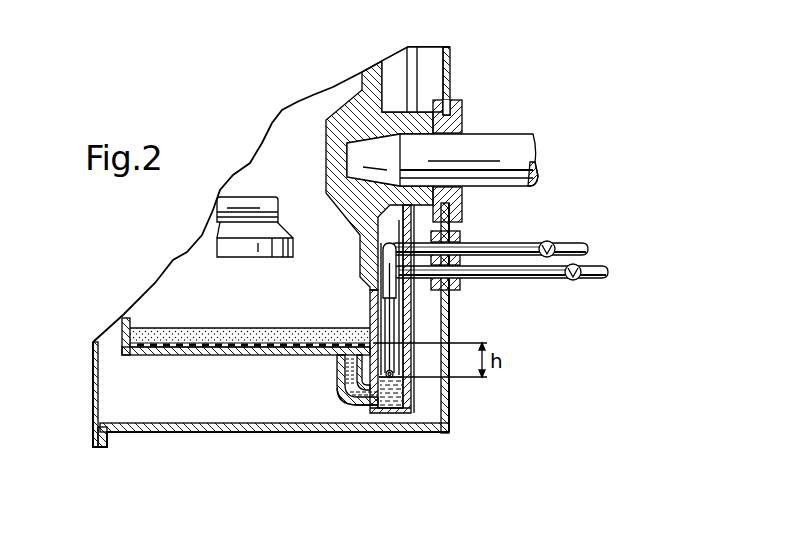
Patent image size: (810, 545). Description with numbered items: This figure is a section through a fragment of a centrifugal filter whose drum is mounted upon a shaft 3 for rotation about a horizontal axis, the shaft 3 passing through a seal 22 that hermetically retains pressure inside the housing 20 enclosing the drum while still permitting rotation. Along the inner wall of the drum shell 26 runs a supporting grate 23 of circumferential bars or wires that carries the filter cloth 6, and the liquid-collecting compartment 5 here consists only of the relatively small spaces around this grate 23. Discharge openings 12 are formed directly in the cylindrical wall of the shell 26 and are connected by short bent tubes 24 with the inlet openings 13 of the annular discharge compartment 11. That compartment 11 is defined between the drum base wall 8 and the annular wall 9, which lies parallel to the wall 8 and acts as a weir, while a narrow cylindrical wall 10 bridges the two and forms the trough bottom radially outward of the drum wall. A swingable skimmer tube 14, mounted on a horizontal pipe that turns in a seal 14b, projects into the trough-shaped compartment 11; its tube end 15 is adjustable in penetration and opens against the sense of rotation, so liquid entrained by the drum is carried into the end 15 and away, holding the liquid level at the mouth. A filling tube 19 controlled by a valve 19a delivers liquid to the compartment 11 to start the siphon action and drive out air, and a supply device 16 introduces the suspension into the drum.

The shaft 3 is at (523, 153).
The liquid-collecting compartment 5 is at (158, 348).
The filter cloth 6 is at (145, 328).
The wall 8 is at (343, 130).
The annular wall 9 is at (413, 330).
The cylindrical wall 10 is at (383, 415).
The discharge compartment 11 is at (449, 397).
The discharge openings 12 is at (335, 360).
The inlet openings 13 is at (403, 414).
The skimmer tube 14 is at (388, 308).
The seal 14b is at (460, 285).
The tube end 15 is at (413, 392).
The supply device 16 is at (227, 248).
The filling tube 19 is at (389, 258).
The valve 19a is at (550, 243).
The housing 20 is at (91, 453).
The seal 22 is at (462, 123).
The supporting grate 23 is at (251, 348).
The bent tubes 24 is at (347, 405).
The drum shell 26 is at (210, 356).